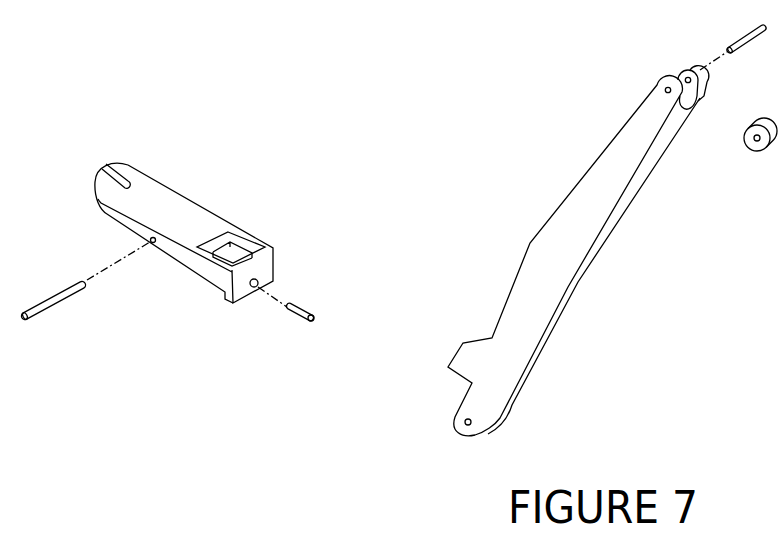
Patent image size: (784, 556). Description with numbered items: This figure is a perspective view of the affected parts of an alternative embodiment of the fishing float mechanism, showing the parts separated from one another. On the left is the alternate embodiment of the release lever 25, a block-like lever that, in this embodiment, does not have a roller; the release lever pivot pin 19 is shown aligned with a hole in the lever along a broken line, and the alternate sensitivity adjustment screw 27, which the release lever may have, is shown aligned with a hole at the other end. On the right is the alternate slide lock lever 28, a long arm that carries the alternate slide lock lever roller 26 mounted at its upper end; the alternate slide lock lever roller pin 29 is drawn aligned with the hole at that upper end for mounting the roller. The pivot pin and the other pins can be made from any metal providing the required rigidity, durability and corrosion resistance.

The release lever pivot pin 19 is at (60, 298).
The release lever 25 is at (157, 213).
The slide lock lever roller 26 is at (755, 142).
The sensitivity adjustment screw 27 is at (305, 305).
The slide lock lever 28 is at (543, 273).
The slide lock lever roller pin 29 is at (735, 43).